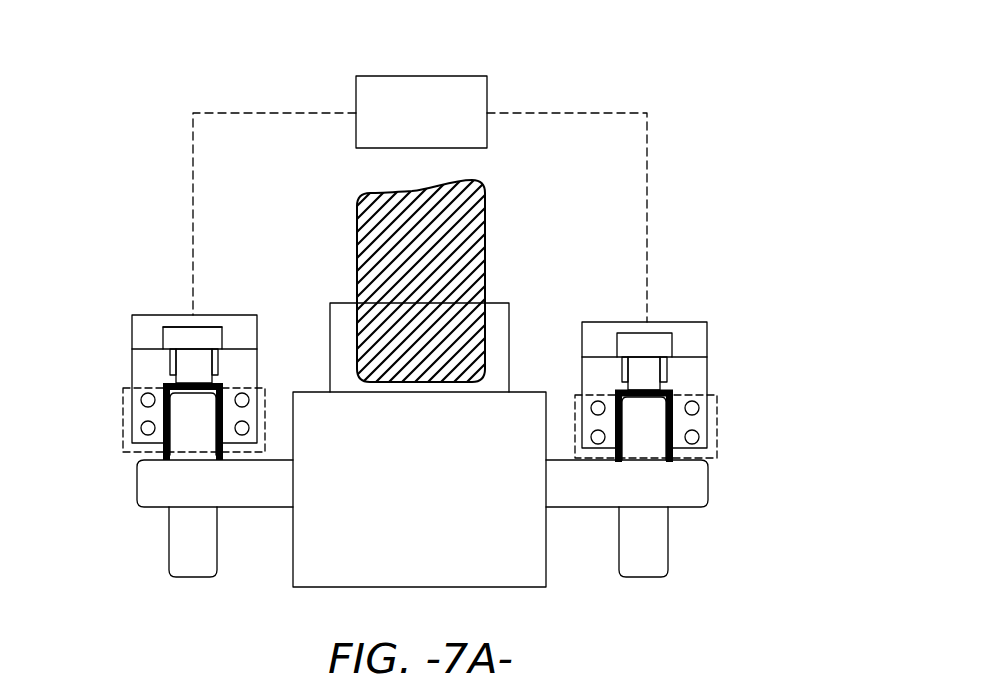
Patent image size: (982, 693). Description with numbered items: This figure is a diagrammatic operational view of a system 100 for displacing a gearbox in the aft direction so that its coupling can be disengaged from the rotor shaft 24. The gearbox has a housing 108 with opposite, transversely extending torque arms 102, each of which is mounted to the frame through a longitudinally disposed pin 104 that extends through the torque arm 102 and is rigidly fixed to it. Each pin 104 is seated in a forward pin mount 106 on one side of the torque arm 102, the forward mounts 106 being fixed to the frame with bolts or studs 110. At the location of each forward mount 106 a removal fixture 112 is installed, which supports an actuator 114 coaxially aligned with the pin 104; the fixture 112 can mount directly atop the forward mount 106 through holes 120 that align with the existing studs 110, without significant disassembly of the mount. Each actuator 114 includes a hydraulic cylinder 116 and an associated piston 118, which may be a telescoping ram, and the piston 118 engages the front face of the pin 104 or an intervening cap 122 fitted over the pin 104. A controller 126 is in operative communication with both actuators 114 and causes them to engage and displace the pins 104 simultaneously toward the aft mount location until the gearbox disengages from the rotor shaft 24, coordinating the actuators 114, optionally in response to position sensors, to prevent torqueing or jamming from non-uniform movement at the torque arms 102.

The controller 126 is at (443, 76).
The rotor shaft 24 is at (485, 232).
The clamping system 100 is at (732, 329).
The torque arm 102 is at (137, 477).
The pin 104 is at (169, 528).
The forward pin mount 106 is at (717, 425).
The housing 108 is at (430, 468).
The studs 110 is at (699, 405).
The removal fixture 112 is at (142, 315).
The actuator 114 is at (203, 324).
The hydraulic cylinder 116 is at (163, 338).
The piston 118 is at (667, 377).
The holes 120 is at (141, 400).
The cap 122 is at (163, 450).